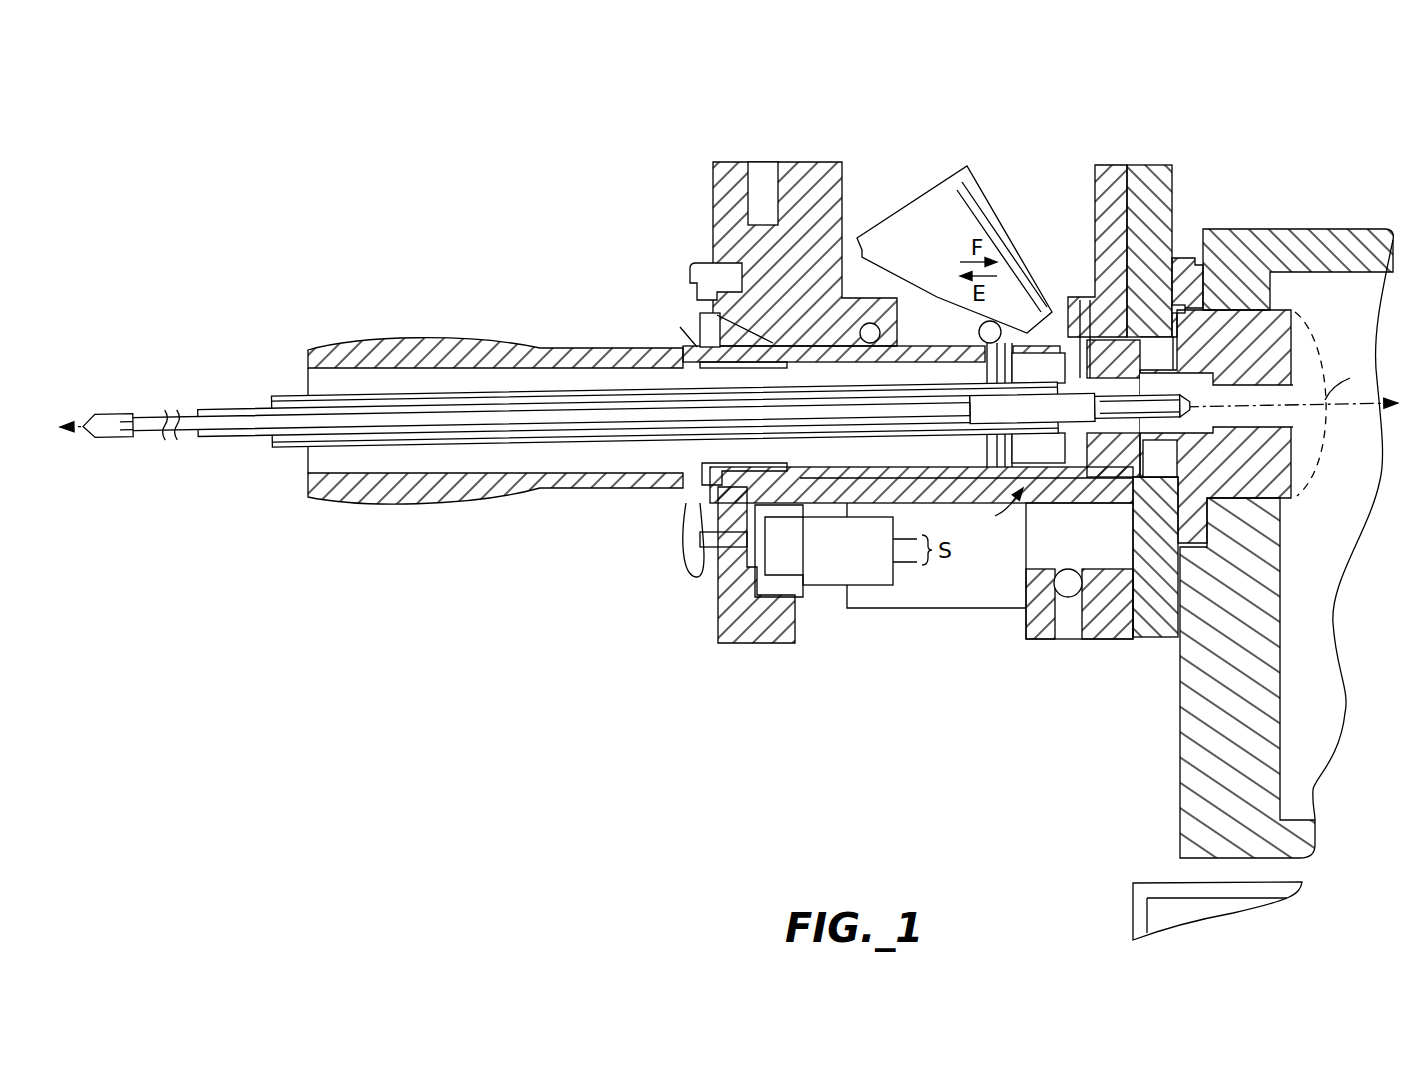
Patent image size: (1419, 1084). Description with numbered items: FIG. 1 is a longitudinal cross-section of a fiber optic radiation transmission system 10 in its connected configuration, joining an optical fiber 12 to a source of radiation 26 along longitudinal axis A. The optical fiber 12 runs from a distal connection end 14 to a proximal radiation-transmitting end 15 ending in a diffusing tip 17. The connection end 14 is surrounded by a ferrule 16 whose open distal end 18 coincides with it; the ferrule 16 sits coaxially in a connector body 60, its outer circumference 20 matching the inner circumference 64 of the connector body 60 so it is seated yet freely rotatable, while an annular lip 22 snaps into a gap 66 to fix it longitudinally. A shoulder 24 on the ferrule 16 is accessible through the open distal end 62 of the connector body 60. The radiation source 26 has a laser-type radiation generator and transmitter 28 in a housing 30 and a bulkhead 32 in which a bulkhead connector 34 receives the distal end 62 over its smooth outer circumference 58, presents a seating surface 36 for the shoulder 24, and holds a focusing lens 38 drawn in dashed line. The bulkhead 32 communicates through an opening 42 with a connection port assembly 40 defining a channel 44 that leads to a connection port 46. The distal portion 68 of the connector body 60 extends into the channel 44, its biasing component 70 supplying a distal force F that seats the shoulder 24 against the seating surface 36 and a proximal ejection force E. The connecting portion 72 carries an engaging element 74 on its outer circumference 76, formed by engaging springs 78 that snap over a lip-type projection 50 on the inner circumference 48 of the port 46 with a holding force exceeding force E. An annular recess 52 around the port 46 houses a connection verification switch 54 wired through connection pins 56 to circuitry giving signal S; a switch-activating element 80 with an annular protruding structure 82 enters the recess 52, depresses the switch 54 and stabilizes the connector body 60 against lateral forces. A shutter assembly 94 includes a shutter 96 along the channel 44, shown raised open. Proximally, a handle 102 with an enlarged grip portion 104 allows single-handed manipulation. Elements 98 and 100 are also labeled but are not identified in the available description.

The fiber optic radiation transmission system 10 is at (560, 200).
The optical fiber 12 is at (228, 443).
The distal end 14 is at (1290, 457).
The proximal end 15 is at (110, 442).
The ferrule 16 is at (1112, 400).
The diffusing tip 17 is at (93, 442).
The open distal end 18 is at (1273, 347).
The outer circumference 20 is at (1097, 335).
The annular lip 22 is at (1078, 378).
The shoulder 24 is at (1014, 476).
The source of radiation 26 is at (1192, 520).
The radiation generator and transmitter 28 is at (1330, 278).
The housing 30 is at (1280, 245).
The bulkhead 32 is at (1160, 165).
The bulkhead connector 34 is at (1223, 305).
The seating surface 36 is at (1135, 300).
The focusing device 38 is at (1159, 458).
The connection port assembly 40 is at (725, 687).
The opening 42 is at (1277, 533).
The channel 44 is at (958, 505).
The connection port 46 is at (702, 497).
The inner circumference 48 is at (733, 565).
The projection 50 is at (733, 518).
The recess 52 is at (720, 607).
The connection verification switch 54 is at (767, 553).
The connection pins 56 is at (908, 564).
The outer circumference 58 is at (1127, 400).
The connector body 60 is at (352, 330).
The open distal end 62 is at (1200, 436).
The inner circumference 64 is at (1112, 292).
The gap 66 is at (1084, 340).
The distal portion 68 is at (712, 134).
The biasing component 70 is at (973, 360).
The connecting portion 72 is at (727, 308).
The engaging element 74 is at (716, 345).
The outer circumference 76 is at (746, 306).
The engaging springs 78 is at (735, 330).
The switch-activating element 80 is at (693, 293).
The protruding structure 82 is at (712, 272).
The shutter assembly 94 is at (946, 162).
The shutter 96 is at (972, 183).
The spring clip 98 is at (662, 558).
The spring loop 100 is at (688, 570).
The handle 102 is at (683, 654).
The grip portion 104 is at (540, 506).